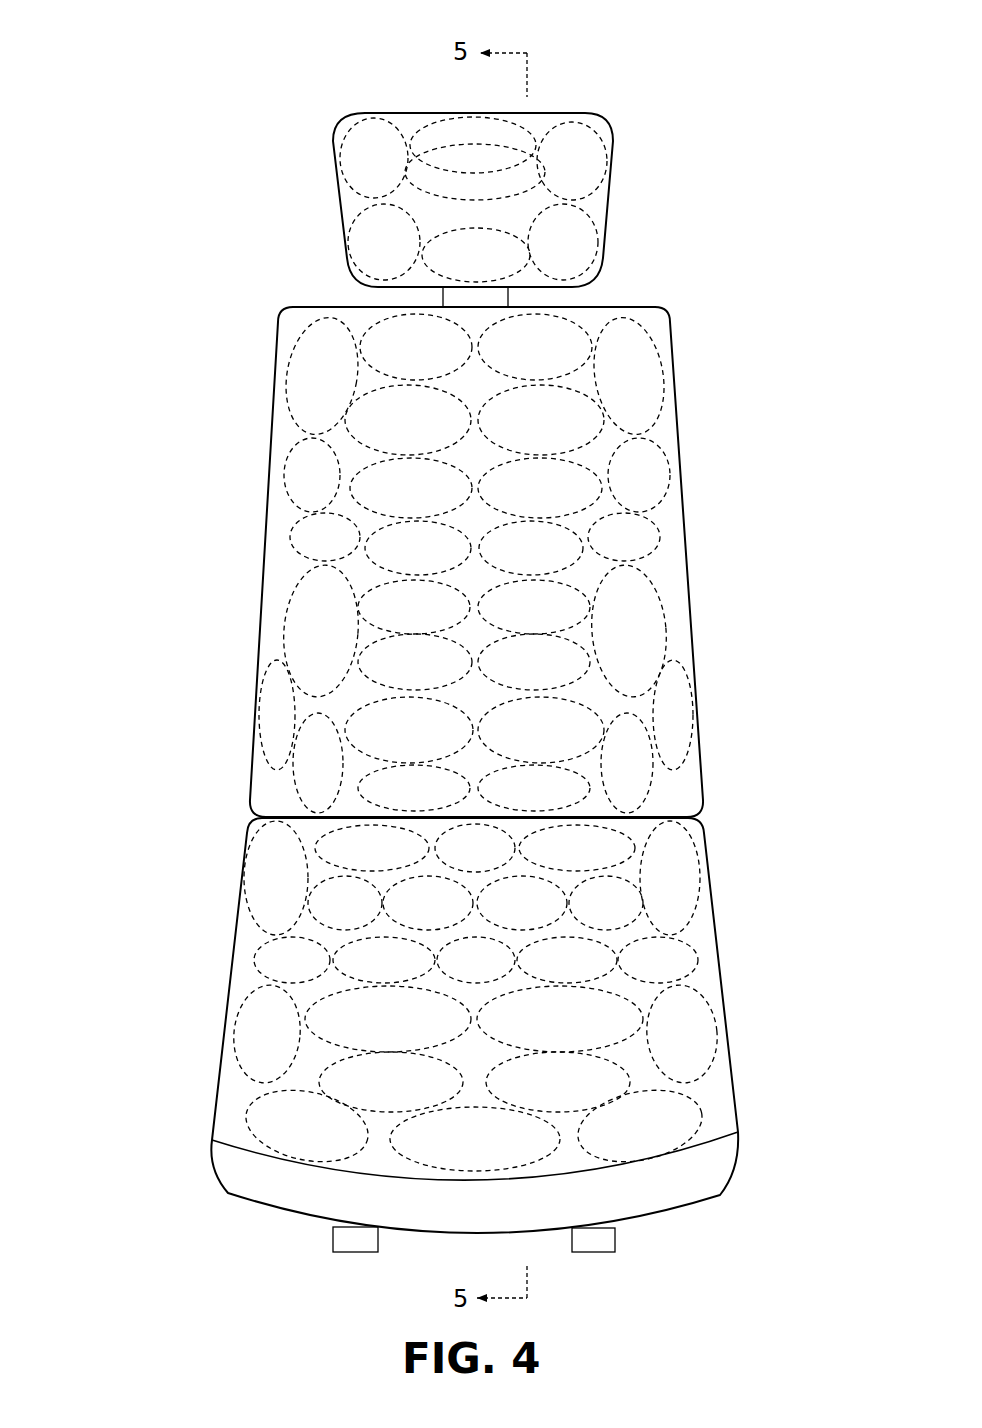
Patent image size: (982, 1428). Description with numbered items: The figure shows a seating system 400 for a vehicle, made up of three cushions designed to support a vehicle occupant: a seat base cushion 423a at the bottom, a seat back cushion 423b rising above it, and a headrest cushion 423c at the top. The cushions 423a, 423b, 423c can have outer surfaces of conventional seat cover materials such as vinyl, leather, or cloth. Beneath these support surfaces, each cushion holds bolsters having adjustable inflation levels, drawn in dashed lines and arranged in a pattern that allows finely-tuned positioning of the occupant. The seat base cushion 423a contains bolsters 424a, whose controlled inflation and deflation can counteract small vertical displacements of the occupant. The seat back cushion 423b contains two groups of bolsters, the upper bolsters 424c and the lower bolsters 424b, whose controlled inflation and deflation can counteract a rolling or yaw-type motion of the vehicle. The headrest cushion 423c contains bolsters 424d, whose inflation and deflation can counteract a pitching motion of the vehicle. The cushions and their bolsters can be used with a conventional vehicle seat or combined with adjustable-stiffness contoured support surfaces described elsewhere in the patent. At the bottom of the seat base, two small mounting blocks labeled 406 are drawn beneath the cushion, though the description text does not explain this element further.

The seating system 400 is at (240, 185).
The cushion 423c is at (355, 115).
The cushion 423b is at (275, 388).
The cushion 423a is at (217, 1050).
The bolsters 424d is at (597, 165).
The bolsters 424c is at (645, 530).
The bolsters 424b is at (643, 797).
The bolsters 424a is at (668, 957).
The seat mounting feet 406 is at (615, 1233).